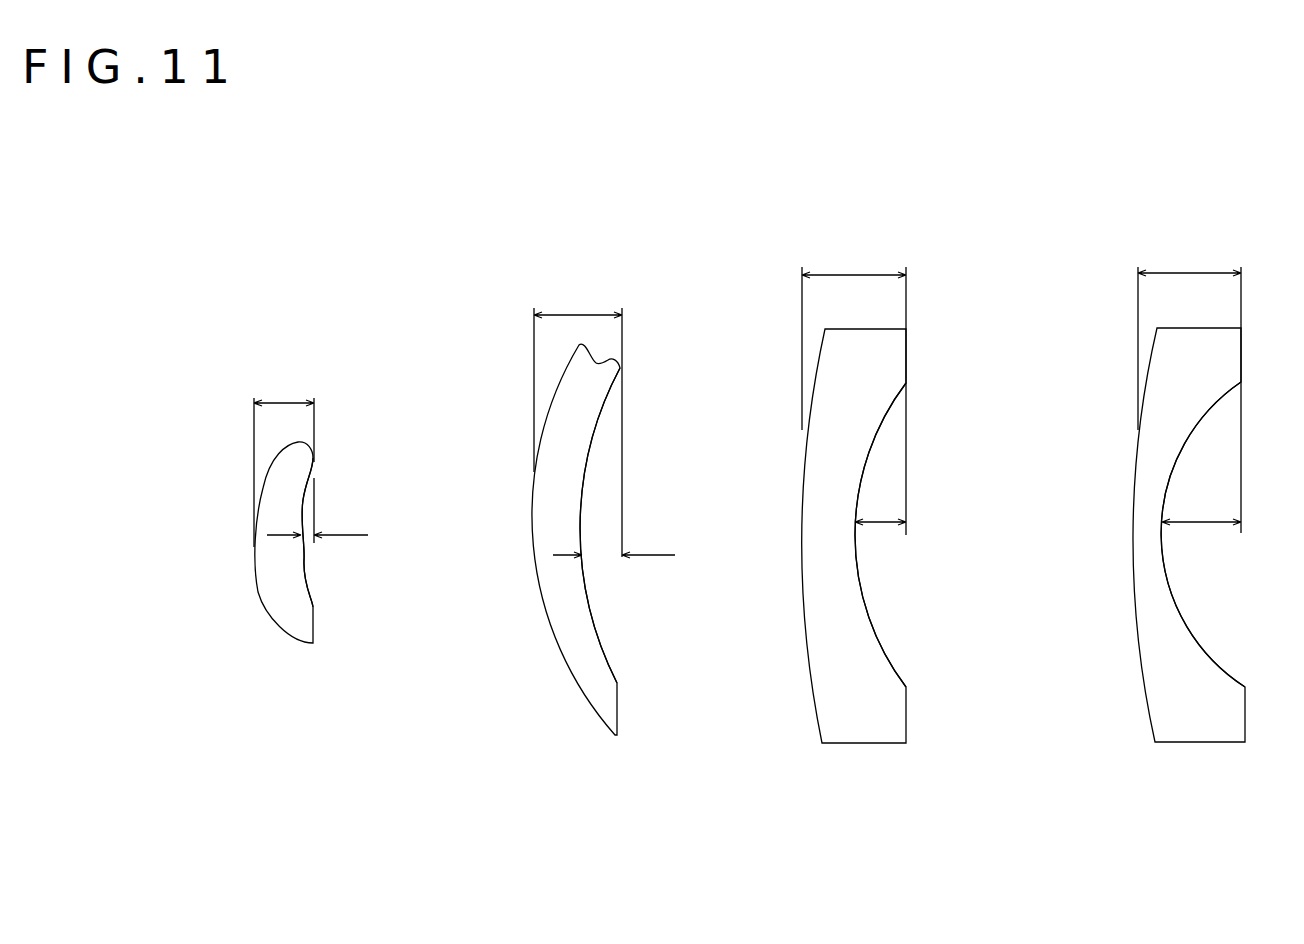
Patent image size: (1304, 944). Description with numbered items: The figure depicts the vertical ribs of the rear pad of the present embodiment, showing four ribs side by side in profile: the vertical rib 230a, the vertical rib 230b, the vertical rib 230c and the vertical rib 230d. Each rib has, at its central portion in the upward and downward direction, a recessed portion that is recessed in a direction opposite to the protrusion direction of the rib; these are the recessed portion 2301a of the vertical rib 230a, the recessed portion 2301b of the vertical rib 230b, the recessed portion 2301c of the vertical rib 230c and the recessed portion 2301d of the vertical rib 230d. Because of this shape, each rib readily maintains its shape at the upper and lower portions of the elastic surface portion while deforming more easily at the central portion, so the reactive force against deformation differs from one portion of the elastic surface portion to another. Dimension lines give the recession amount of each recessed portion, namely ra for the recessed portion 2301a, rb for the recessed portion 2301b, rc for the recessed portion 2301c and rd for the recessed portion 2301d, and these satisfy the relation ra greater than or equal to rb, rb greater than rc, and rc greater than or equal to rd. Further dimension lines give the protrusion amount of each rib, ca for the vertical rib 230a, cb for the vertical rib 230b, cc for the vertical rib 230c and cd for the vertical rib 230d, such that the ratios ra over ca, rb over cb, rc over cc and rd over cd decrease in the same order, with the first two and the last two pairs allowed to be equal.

The vertical rib 230a is at (1147, 467).
The vertical rib 230b is at (812, 468).
The vertical rib 230c is at (543, 537).
The vertical rib 230d is at (265, 557).
The recessed portion 2301a is at (1168, 578).
The recessed portion 2301b is at (858, 593).
The recessed portion 2301c is at (585, 592).
The recessed portion 2301d is at (305, 567).
The protrusion amount ca is at (1189, 389).
The protrusion amount cb is at (854, 390).
The protrusion amount cc is at (578, 422).
The protrusion amount cd is at (284, 461).
The recession amount ra is at (1201, 531).
The recession amount rb is at (880, 537).
The recession amount rc is at (614, 542).
The recession amount rd is at (317, 524).